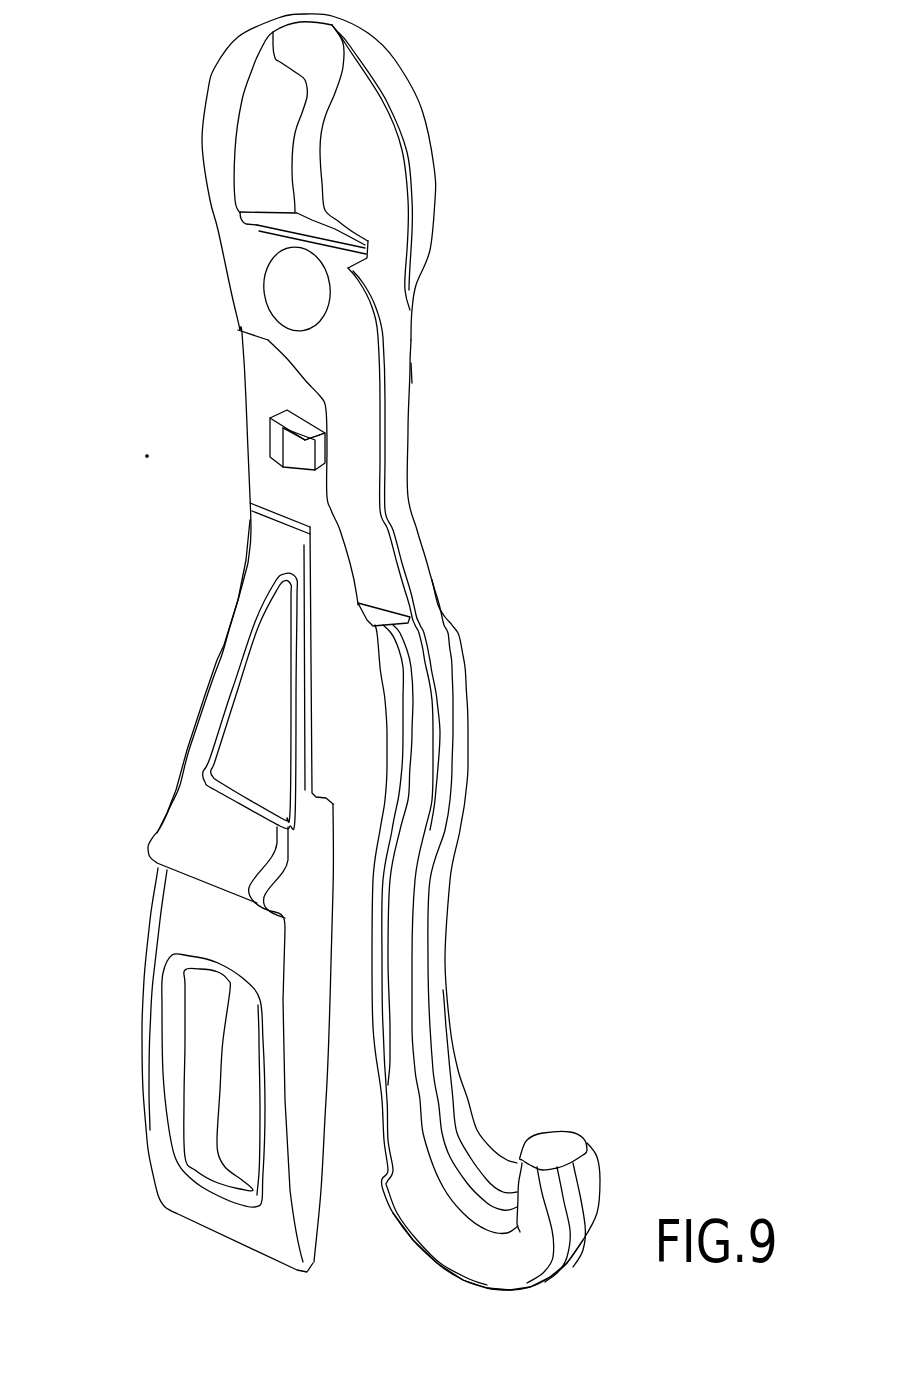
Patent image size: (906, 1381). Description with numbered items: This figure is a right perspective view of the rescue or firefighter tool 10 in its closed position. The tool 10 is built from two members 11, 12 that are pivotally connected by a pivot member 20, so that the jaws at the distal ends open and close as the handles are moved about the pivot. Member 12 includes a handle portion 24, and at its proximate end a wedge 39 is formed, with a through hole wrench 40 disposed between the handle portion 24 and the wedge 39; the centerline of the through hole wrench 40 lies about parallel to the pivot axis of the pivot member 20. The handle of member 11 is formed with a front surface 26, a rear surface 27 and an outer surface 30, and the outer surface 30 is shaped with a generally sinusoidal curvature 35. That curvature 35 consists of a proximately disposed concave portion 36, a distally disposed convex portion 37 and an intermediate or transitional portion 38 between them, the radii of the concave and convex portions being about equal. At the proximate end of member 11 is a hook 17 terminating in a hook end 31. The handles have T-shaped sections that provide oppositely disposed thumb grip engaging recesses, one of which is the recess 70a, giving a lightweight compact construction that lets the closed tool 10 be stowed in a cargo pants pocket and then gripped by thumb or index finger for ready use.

The rescue or firefighter tool 10 is at (466, 423).
The member 11 is at (517, 655).
The member 12 is at (148, 660).
The hook 17 is at (490, 1273).
The pivot member 20 is at (277, 287).
The handle portion 24 is at (232, 687).
The front surface 26 is at (427, 898).
The rear surface 27 is at (466, 803).
The outer surface 30 is at (437, 1007).
The hook end 31 is at (553, 1140).
The sinusoidal curvature 35 is at (437, 977).
The concave portion 36 is at (452, 1108).
The convex portion 37 is at (462, 760).
The transitional portion 38 is at (462, 827).
The wedge 39 is at (282, 1245).
The through hole wrench 40 is at (193, 1077).
The thumb grip engaging recess 70a is at (233, 767).